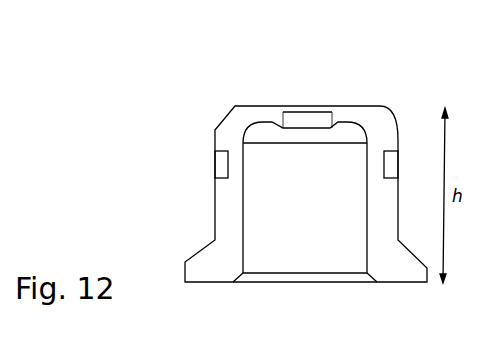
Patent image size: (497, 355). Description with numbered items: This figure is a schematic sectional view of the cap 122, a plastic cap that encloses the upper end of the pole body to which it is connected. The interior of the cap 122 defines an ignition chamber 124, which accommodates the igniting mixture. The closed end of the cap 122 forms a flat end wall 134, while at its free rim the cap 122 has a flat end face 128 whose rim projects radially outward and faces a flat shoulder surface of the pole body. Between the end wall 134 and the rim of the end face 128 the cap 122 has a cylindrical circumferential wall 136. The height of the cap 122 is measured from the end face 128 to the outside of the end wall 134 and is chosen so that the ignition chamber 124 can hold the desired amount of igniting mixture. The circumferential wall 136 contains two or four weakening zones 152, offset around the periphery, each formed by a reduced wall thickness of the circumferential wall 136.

The cap 122 is at (192, 33).
The ignition chamber 124 is at (270, 134).
The end wall 134 is at (363, 105).
The cylindrical circumferential wall 136 is at (213, 217).
The weakening zones 152 is at (213, 163).
The end face 128 is at (194, 282).